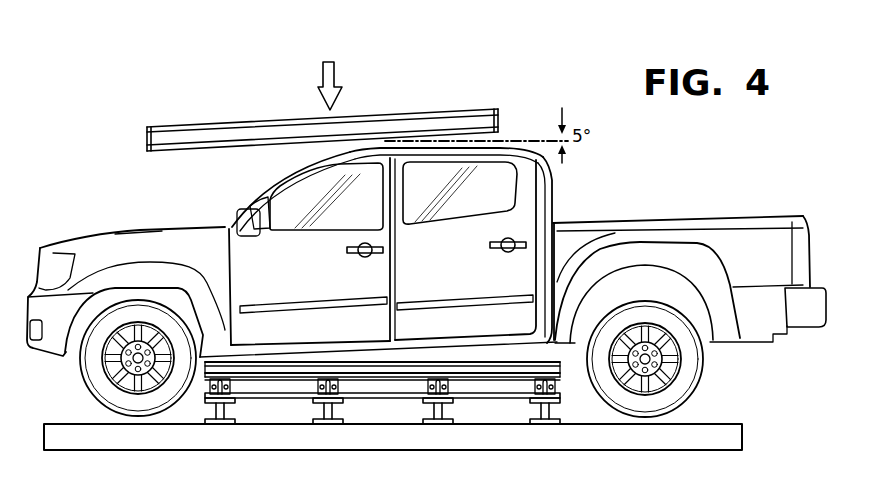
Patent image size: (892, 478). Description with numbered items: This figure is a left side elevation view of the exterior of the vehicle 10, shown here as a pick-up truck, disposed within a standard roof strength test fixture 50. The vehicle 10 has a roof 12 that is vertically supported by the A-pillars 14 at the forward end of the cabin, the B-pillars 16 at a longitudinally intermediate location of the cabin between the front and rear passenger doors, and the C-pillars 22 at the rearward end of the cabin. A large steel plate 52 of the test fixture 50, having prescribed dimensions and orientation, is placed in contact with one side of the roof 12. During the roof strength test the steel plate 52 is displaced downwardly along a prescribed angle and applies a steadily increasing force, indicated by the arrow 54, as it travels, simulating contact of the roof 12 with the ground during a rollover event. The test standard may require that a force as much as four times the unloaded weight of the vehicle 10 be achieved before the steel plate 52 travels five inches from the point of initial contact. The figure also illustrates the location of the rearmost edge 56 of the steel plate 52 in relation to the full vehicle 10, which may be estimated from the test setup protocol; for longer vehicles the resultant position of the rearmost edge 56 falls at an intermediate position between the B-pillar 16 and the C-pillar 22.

The vehicle 10 is at (688, 210).
The roof 12 is at (343, 157).
The A-pillars 14 is at (270, 183).
The B-pillars 16 is at (388, 170).
The C-pillars 22 is at (523, 192).
The roof strength test fixture 50 is at (202, 107).
The steel plate 52 is at (444, 110).
The arrow 54 is at (335, 77).
The rearmost edge 56 is at (500, 113).